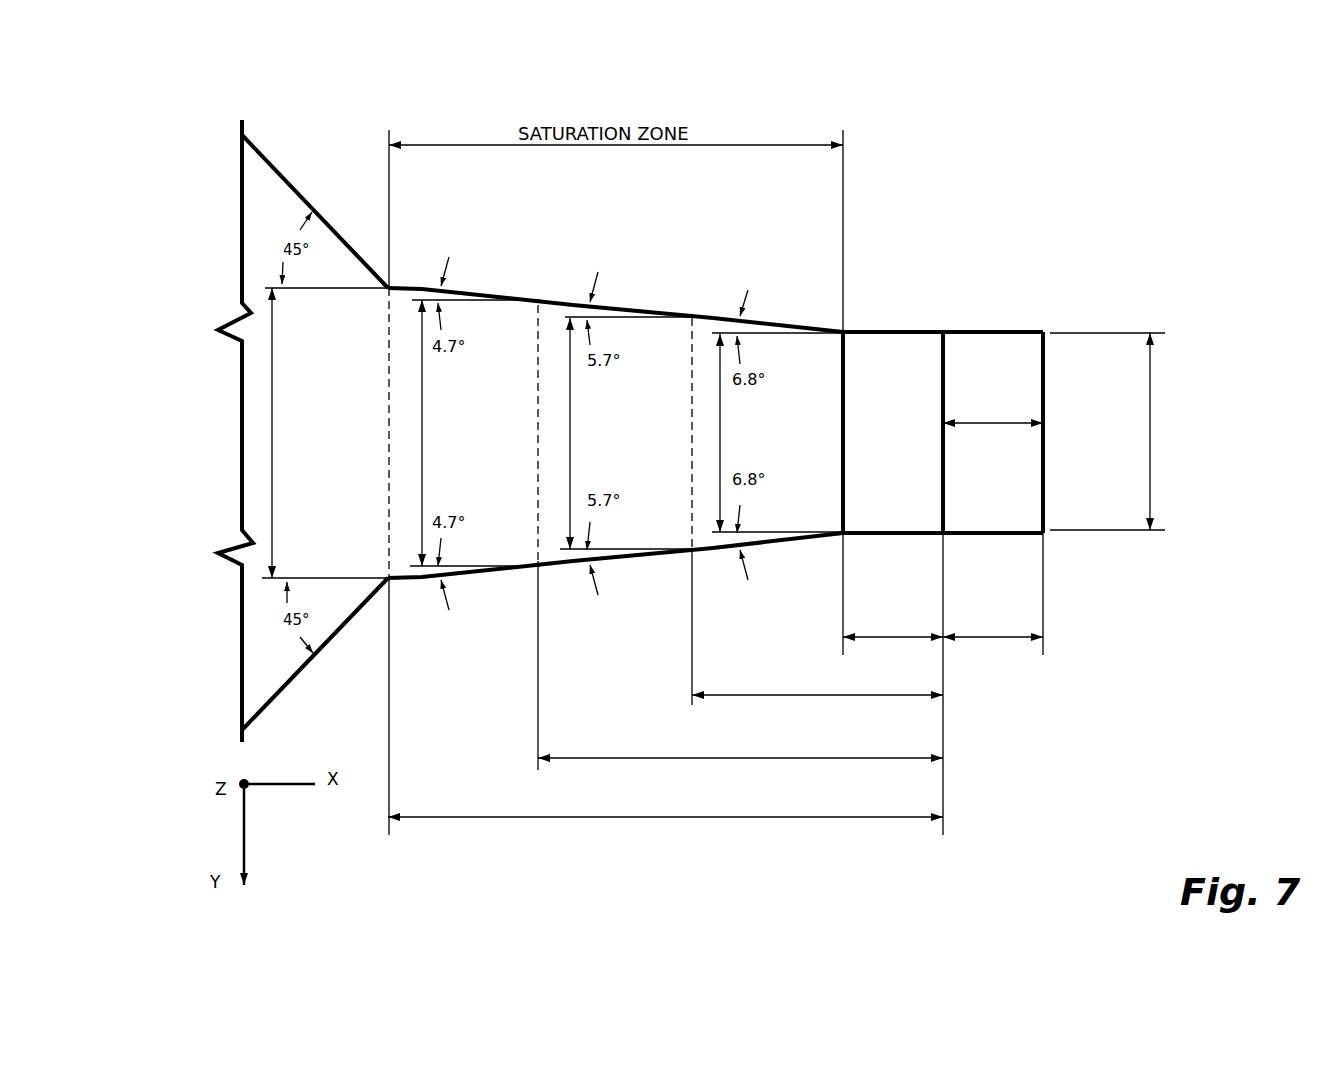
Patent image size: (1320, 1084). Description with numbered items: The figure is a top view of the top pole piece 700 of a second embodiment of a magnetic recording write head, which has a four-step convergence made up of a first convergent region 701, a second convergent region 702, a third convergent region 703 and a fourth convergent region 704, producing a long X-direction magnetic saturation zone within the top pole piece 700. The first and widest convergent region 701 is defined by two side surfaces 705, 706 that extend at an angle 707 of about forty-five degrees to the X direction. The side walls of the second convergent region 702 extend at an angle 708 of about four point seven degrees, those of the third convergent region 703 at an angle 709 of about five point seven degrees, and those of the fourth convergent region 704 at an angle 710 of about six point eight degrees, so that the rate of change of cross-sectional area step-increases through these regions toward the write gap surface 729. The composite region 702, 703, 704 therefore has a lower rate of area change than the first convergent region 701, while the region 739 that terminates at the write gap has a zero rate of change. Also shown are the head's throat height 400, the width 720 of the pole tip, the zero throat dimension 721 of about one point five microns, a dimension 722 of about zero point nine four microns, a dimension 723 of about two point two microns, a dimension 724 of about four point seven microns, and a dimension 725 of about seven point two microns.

The top pole piece 700 is at (1112, 252).
The first convergent region 701 is at (277, 190).
The second convergent region 702 is at (424, 297).
The third convergent region 703 is at (574, 305).
The fourth convergent region 704 is at (713, 318).
The side surface 705 is at (298, 100).
The side surface 706 is at (290, 680).
The angle 707 is at (322, 263).
The angle 708 is at (410, 295).
The angle 709 is at (558, 308).
The angle 710 is at (713, 327).
The pole tip width 720 is at (1152, 445).
The zero throat dimension 721 is at (990, 634).
The dimension 722 is at (918, 590).
The dimension 723 is at (830, 693).
The dimension 724 is at (740, 757).
The dimension 725 is at (675, 815).
The write gap surface 729 is at (1047, 452).
The region 739 is at (1043, 318).
The throat height 400 is at (1003, 425).